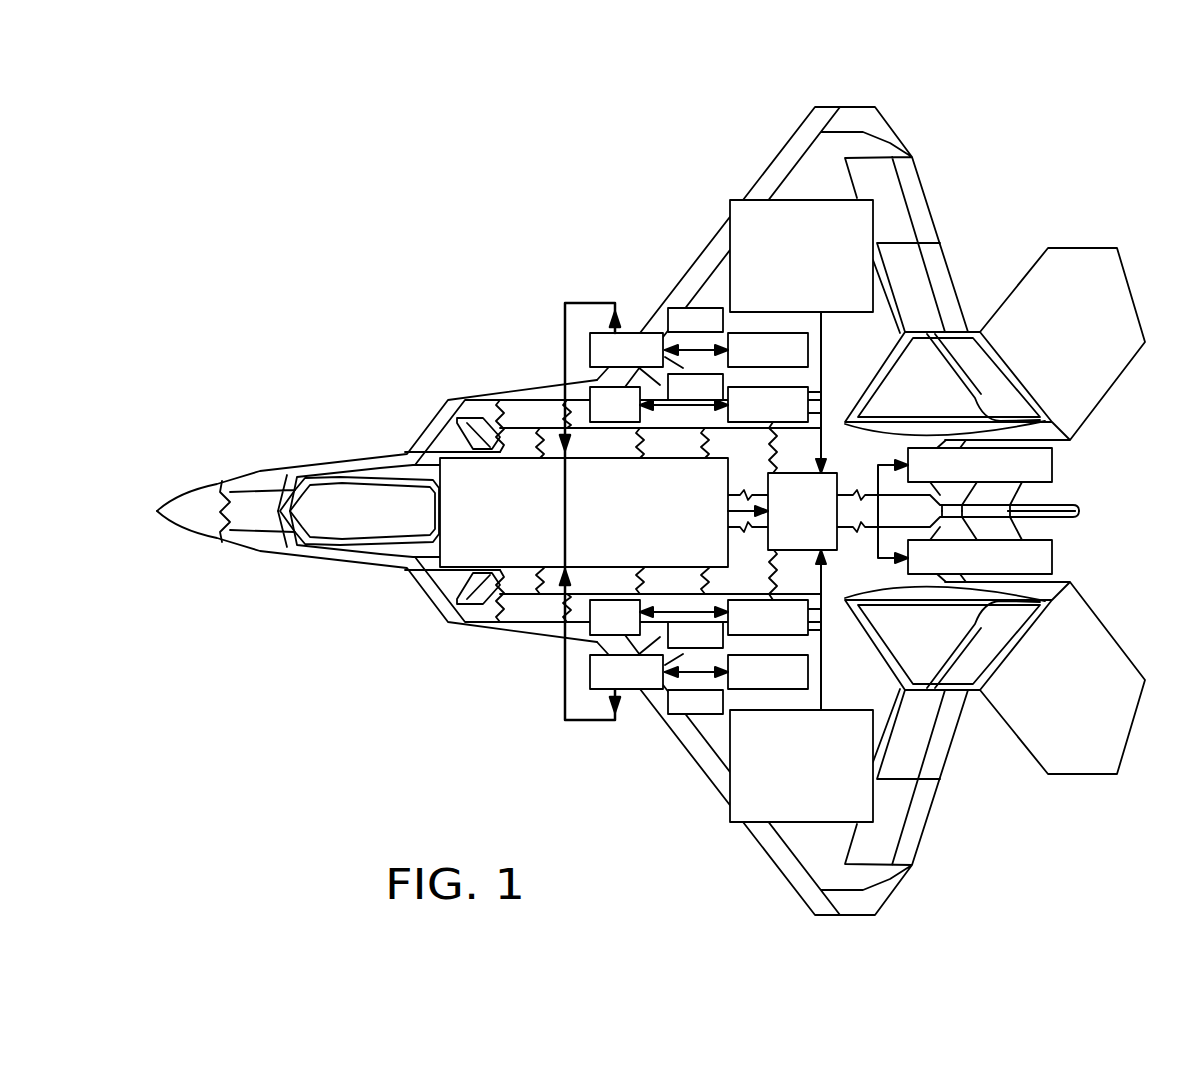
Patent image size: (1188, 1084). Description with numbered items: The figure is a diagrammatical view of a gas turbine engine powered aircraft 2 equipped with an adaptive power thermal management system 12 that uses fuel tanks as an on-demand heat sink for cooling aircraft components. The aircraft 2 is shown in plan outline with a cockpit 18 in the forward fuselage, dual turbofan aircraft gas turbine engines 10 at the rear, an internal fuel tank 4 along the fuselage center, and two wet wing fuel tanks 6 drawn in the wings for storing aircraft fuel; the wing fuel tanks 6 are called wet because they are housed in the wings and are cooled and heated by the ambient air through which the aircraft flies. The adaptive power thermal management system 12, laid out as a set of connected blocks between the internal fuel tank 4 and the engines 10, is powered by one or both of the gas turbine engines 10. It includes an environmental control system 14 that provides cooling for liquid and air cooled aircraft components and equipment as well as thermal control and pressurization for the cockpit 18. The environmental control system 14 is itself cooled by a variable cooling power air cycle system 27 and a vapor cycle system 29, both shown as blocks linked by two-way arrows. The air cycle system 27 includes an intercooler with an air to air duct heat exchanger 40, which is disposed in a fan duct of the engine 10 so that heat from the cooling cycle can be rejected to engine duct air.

The gas turbine engine powered aircraft 2 is at (302, 463).
The internal fuel tank 4 is at (584, 532).
The wet wing fuel tank 6 is at (794, 262).
The turbofan aircraft gas turbine engine 10 is at (1095, 571).
The adaptive power thermal management system 12 is at (653, 703).
The environmental control system 14 is at (578, 683).
The cockpit 18 is at (362, 493).
The variable cooling power air cycle system 27 is at (753, 634).
The vapor cycle system 29 is at (753, 688).
The air to air duct heat exchanger 40 is at (600, 634).